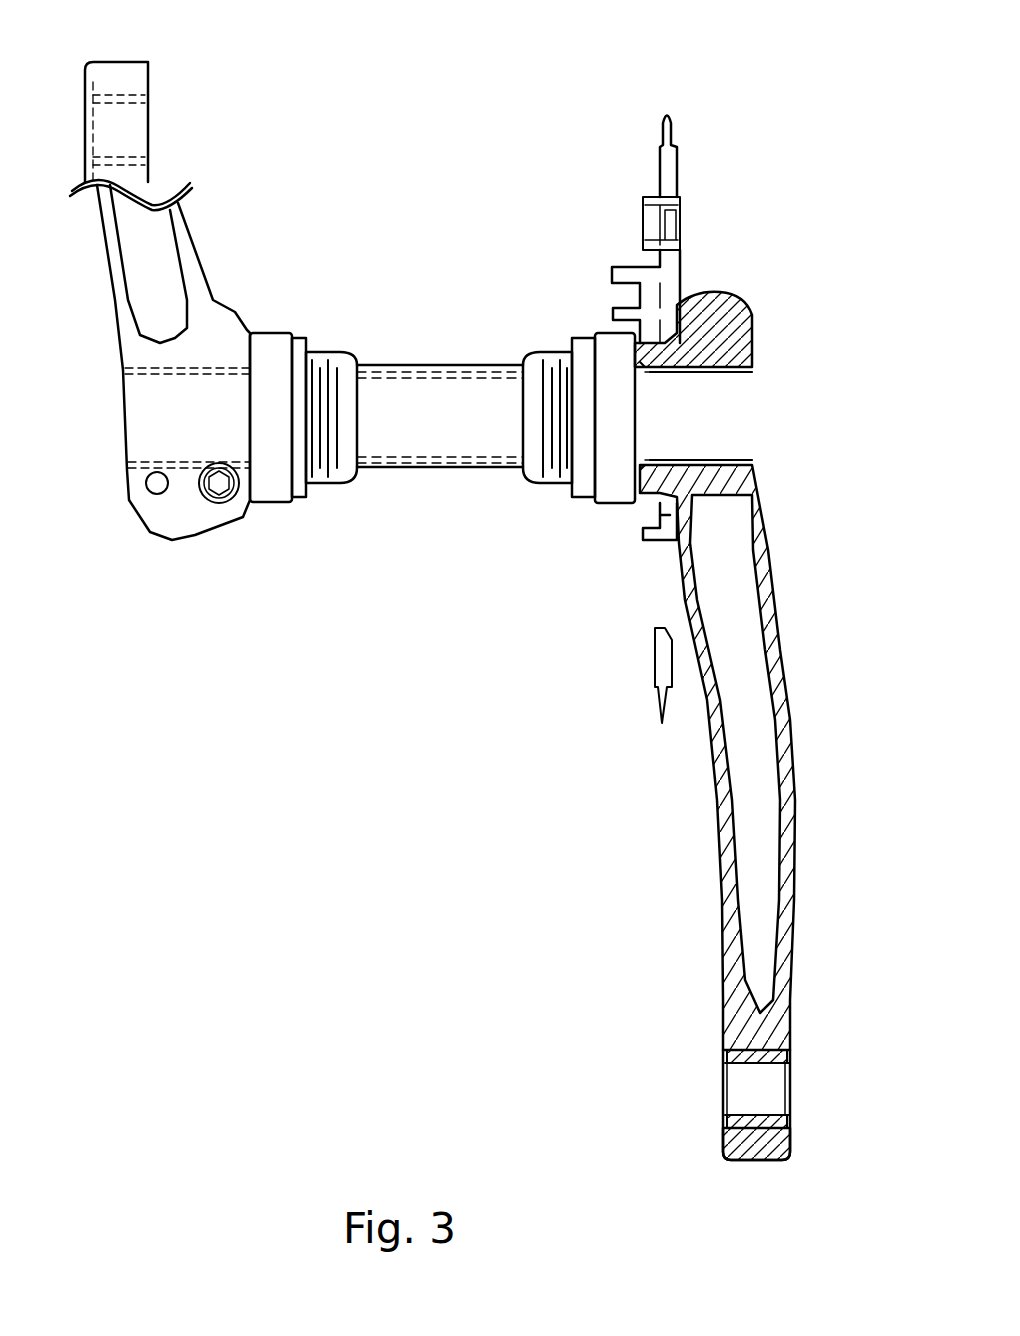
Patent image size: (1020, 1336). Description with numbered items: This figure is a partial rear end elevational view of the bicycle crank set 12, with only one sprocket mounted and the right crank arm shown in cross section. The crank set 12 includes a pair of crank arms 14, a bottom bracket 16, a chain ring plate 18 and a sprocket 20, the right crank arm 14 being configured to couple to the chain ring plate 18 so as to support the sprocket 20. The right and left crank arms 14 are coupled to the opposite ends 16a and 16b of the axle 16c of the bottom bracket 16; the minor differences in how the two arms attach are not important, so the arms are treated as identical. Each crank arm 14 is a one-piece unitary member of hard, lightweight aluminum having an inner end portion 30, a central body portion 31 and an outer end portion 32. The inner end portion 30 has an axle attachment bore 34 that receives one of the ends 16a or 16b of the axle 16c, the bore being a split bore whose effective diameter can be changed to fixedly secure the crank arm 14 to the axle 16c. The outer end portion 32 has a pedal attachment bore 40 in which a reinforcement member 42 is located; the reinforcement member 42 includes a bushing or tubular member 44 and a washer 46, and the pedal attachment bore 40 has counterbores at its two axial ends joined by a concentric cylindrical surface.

The crank set 12 is at (570, 68).
The crank arm 14 is at (215, 240).
The bottom bracket 16 is at (485, 340).
The end of axle 16a is at (745, 385).
The end of axle 16b is at (160, 468).
The axle 16c is at (380, 368).
The chain ring plate 18 is at (668, 268).
The sprocket 20 is at (668, 158).
The inner end portion 30 is at (712, 330).
The central body portion 31 is at (782, 740).
The outer end portion 32 is at (732, 1140).
The axle attachment bore 34 is at (710, 432).
The pedal attachment bore 40 is at (752, 1097).
The reinforcement member 42 is at (798, 1128).
The tubular member 44 is at (728, 1060).
The washer 46 is at (795, 1052).